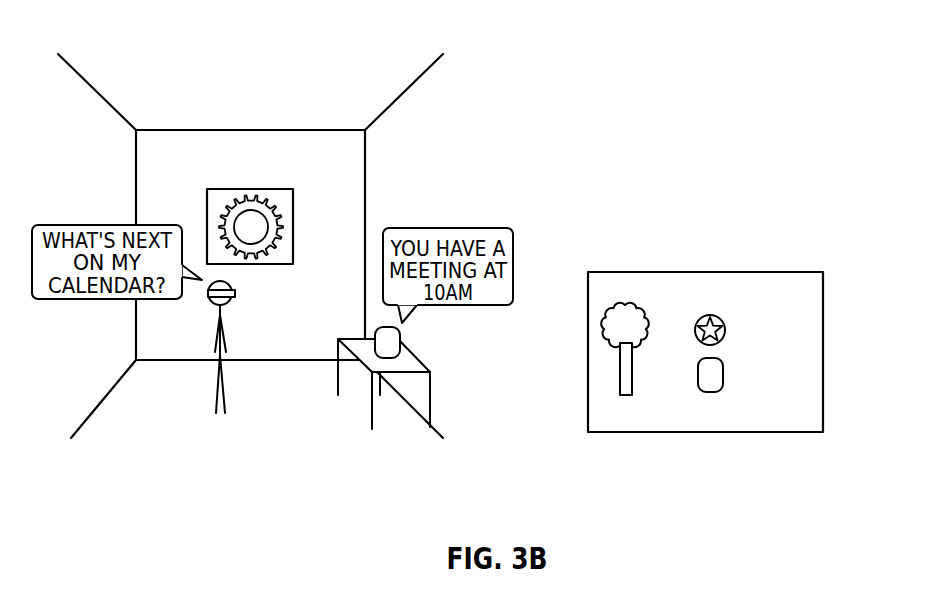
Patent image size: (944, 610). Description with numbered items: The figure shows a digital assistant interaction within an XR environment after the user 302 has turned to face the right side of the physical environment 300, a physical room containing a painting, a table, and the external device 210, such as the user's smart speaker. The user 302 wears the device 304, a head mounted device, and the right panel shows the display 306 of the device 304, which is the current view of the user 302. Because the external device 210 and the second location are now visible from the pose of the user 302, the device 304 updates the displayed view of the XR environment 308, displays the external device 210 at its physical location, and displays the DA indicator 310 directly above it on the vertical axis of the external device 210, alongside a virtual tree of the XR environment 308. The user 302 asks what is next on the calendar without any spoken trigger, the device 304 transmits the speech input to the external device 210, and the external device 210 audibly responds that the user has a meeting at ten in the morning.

The external device 210 is at (402, 343).
The physical environment 300 is at (237, 130).
The user 302 is at (230, 344).
The device 304 is at (238, 292).
The display 306 is at (763, 272).
The XR environment 308 is at (748, 308).
The DA indicator 310 is at (703, 315).